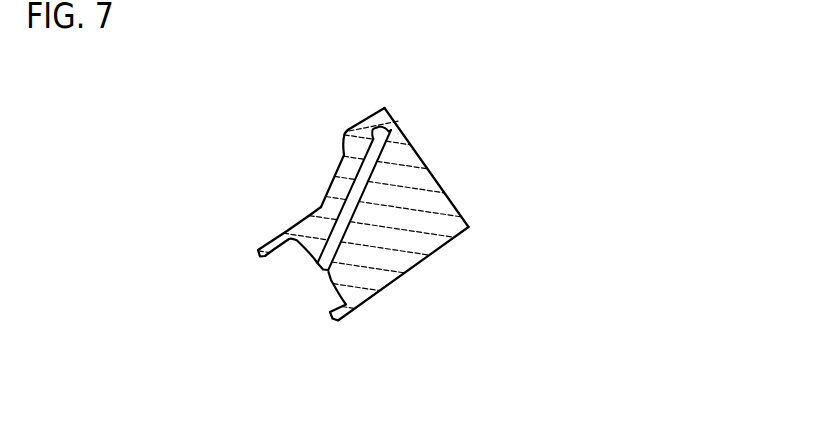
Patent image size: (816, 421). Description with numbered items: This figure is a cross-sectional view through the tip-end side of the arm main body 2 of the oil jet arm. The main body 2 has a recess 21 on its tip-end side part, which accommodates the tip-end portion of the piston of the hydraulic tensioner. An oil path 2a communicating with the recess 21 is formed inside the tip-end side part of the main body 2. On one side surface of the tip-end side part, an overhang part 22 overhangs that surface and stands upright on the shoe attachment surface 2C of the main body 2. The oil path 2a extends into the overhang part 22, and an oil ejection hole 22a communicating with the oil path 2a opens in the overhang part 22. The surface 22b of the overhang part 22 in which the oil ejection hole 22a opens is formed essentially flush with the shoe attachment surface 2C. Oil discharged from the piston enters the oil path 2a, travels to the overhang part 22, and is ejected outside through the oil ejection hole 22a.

The arm main body 2 is at (442, 257).
The shoe attachment surface 2C is at (431, 173).
The oil path 2a is at (320, 273).
The recess 21 is at (272, 257).
The overhang part 22 is at (349, 130).
The oil ejection hole 22a is at (397, 127).
The surface of the overhang part 22b is at (388, 119).